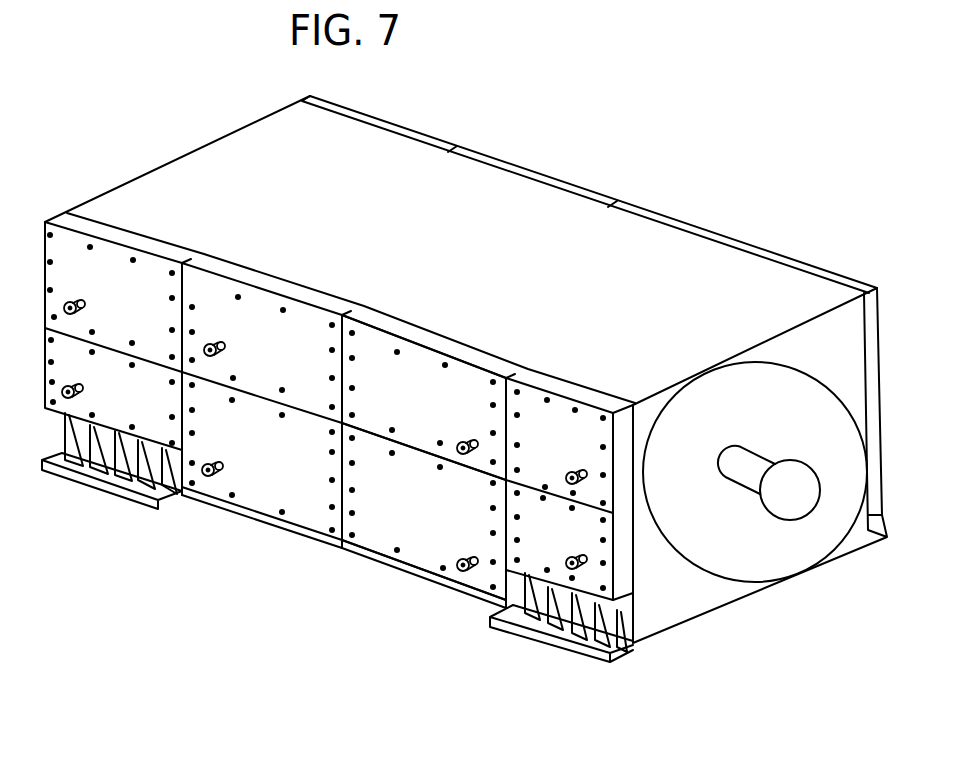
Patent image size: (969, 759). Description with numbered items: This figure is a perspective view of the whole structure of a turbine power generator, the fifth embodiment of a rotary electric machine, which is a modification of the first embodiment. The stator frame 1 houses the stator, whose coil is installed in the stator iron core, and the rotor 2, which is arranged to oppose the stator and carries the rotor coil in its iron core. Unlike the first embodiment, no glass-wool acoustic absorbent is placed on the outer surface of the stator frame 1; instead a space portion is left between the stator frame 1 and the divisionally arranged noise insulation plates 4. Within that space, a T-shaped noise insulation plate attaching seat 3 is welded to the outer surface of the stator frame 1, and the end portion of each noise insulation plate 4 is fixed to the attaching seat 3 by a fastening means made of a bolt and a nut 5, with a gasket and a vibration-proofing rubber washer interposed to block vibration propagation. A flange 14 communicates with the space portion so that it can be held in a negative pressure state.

The stator frame 1 is at (333, 165).
The rotor 2 is at (777, 490).
The noise insulation plate attaching seat 3 is at (317, 300).
The noise insulation plate 4 is at (423, 517).
The nut 5 is at (443, 568).
The flange 14 is at (210, 476).